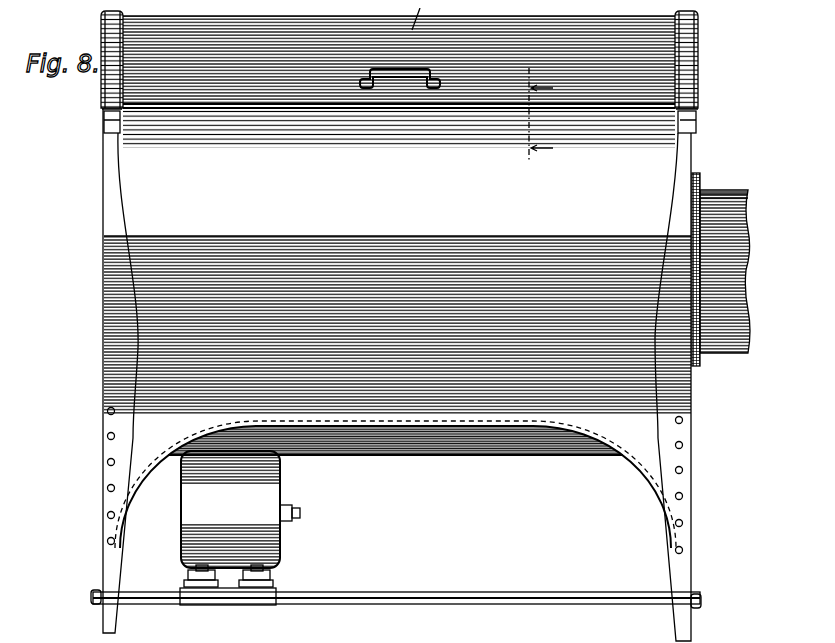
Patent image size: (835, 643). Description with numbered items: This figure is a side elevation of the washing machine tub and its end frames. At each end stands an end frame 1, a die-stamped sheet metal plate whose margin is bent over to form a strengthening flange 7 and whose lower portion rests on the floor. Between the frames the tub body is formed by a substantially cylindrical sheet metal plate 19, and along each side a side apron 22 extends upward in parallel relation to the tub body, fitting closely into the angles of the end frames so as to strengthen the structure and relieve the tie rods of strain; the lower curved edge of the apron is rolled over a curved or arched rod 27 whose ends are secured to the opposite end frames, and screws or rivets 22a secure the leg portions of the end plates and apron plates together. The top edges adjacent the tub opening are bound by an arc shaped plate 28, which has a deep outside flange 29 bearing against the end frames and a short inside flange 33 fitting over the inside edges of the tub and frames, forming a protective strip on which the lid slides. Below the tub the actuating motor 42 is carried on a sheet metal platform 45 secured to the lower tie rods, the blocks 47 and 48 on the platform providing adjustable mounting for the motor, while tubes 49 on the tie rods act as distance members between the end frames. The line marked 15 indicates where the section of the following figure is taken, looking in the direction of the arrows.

The end frame 1 is at (94, 262).
The flange 7 is at (112, 318).
The section line 15— 15 is at (543, 121).
The cylindrical sheet metal plate 19 is at (383, 447).
The side apron 22 is at (397, 215).
The screws or rivets 22a is at (99, 452).
The curved or arched rod 27 is at (612, 458).
The arc shaped plate 28 is at (96, 113).
The outside flange 29 is at (96, 102).
The short flange 33 is at (113, 112).
The actuating motor 42 is at (240, 509).
The sheet metal platform 45 is at (225, 590).
The block 47 is at (266, 581).
The block 48 is at (263, 568).
The tube 49 is at (430, 581).